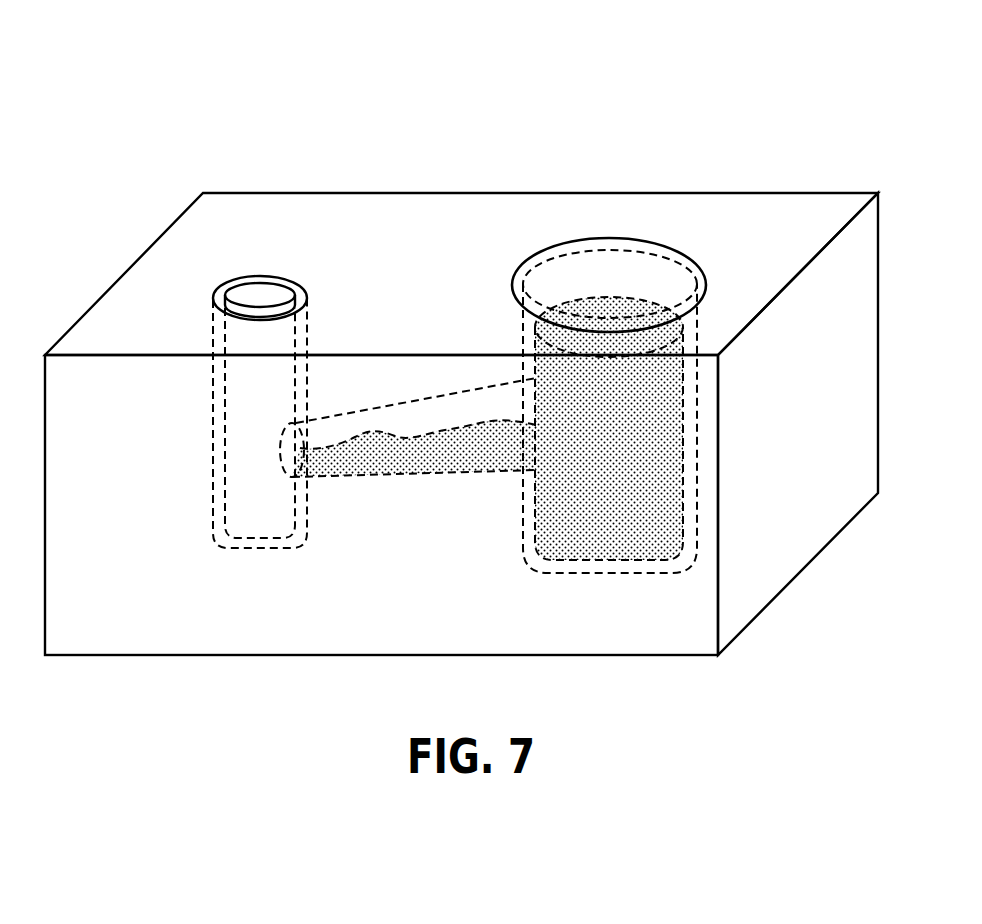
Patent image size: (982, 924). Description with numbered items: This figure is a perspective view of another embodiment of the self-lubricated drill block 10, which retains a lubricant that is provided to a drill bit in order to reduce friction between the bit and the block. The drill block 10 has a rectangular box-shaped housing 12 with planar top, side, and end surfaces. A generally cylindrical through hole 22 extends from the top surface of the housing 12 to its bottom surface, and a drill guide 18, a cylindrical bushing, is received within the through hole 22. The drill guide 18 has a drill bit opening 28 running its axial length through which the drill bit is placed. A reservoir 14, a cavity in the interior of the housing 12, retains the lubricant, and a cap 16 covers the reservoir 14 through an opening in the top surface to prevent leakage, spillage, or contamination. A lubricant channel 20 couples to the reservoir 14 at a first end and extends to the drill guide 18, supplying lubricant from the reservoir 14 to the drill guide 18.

The self-lubricated drill block 10 is at (461, 333).
The housing 12 is at (744, 189).
The reservoir 14 is at (701, 433).
The cap 16 is at (543, 250).
The drill guide 18 is at (263, 285).
The lubricant channel 20 is at (442, 478).
The through hole 22 is at (211, 460).
The drill bit opening 28 is at (242, 290).